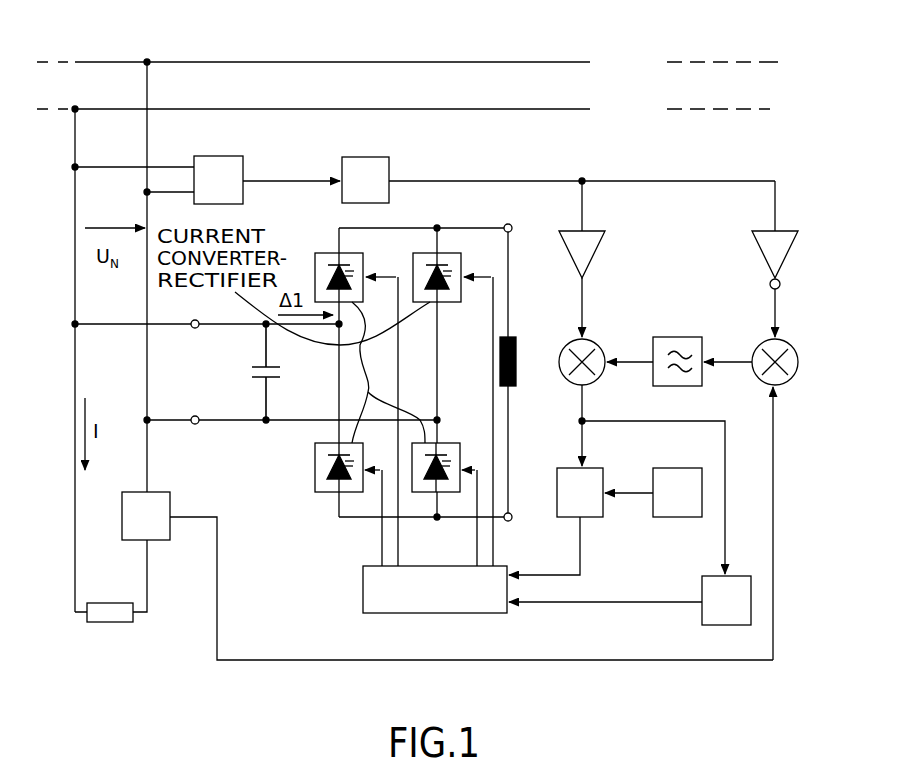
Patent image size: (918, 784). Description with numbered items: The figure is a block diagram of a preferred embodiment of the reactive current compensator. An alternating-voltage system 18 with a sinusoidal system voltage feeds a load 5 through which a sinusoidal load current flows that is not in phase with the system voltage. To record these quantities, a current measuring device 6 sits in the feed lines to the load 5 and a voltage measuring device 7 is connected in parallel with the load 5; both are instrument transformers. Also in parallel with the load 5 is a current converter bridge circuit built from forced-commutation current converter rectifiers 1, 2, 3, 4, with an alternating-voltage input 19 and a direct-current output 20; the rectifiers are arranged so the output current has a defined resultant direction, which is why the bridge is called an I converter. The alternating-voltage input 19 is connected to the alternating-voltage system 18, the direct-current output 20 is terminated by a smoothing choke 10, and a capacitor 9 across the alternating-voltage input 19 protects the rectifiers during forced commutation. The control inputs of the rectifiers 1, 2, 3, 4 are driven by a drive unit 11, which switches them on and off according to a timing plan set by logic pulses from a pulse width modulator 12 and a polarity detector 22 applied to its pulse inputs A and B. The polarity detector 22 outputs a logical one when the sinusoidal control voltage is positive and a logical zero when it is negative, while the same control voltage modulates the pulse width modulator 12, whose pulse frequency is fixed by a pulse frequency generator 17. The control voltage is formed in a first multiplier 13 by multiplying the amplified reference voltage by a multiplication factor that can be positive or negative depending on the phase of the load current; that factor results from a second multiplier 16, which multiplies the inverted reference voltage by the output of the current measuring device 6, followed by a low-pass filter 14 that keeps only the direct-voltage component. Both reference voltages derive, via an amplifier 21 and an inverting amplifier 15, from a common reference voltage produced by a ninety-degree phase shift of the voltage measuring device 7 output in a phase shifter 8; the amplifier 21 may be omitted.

The forced-commutation current converter rectifier 1 is at (315, 258).
The forced-commutation current converter rectifier 2 is at (413, 258).
The forced-commutation current converter rectifier 3 is at (313, 462).
The forced-commutation current converter rectifier 4 is at (448, 443).
The load 5 is at (106, 623).
The current measuring device 6 is at (225, 535).
The voltage measuring device 7 is at (258, 55).
The phase shifter 8 is at (385, 99).
The capacitor 9 is at (277, 372).
The smoothing choke 10 is at (516, 370).
The drive unit 11 is at (375, 632).
The pulse width modulator 12 is at (590, 535).
The first multiplier 13 is at (565, 346).
The low-pass filter 14 is at (680, 232).
The inverting amplifier 15 is at (756, 250).
The second multiplier 16 is at (757, 380).
The pulse frequency generator 17 is at (778, 464).
The alternating-voltage system 18 is at (590, 62).
The alternating-voltage input 19 is at (192, 414).
The direct-current output 20 is at (512, 226).
The amplifier 21 is at (596, 257).
The polarity detector 22 is at (696, 668).